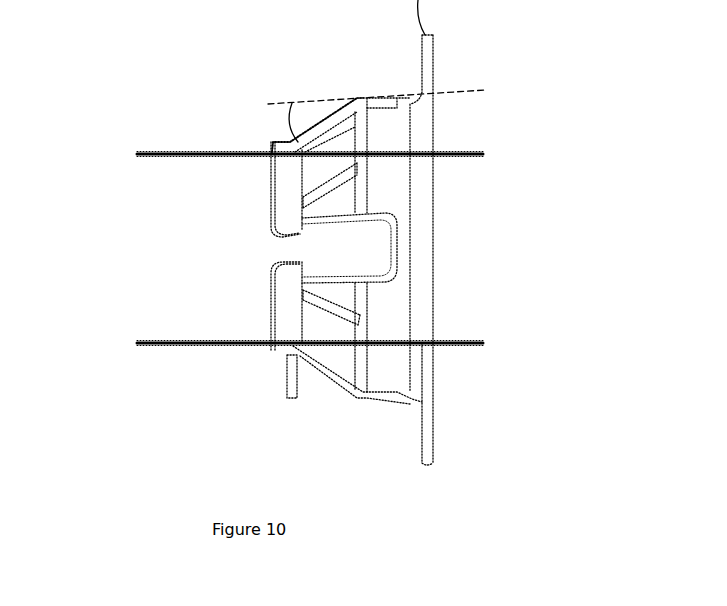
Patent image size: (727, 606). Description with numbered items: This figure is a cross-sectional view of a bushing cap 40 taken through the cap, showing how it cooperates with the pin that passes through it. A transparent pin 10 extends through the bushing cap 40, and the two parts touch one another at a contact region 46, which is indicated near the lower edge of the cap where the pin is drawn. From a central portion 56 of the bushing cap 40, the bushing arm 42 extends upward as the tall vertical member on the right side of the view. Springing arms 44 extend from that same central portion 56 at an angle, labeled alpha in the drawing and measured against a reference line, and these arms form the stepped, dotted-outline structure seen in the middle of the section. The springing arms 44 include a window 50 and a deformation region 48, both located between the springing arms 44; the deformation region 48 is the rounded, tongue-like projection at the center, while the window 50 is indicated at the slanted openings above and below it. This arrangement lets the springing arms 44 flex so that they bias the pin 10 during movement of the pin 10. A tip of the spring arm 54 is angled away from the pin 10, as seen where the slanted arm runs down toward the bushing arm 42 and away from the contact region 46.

The pin 10 is at (193, 345).
The bushing cap 40 is at (145, 382).
The bushing arm 42 is at (452, 0).
The springing arms 44 is at (262, 225).
The contact region 46 is at (291, 398).
The deformation region 48 is at (360, 248).
The window 50 is at (335, 170).
The spring arm 54 is at (273, 345).
The central portion 56 is at (362, 406).